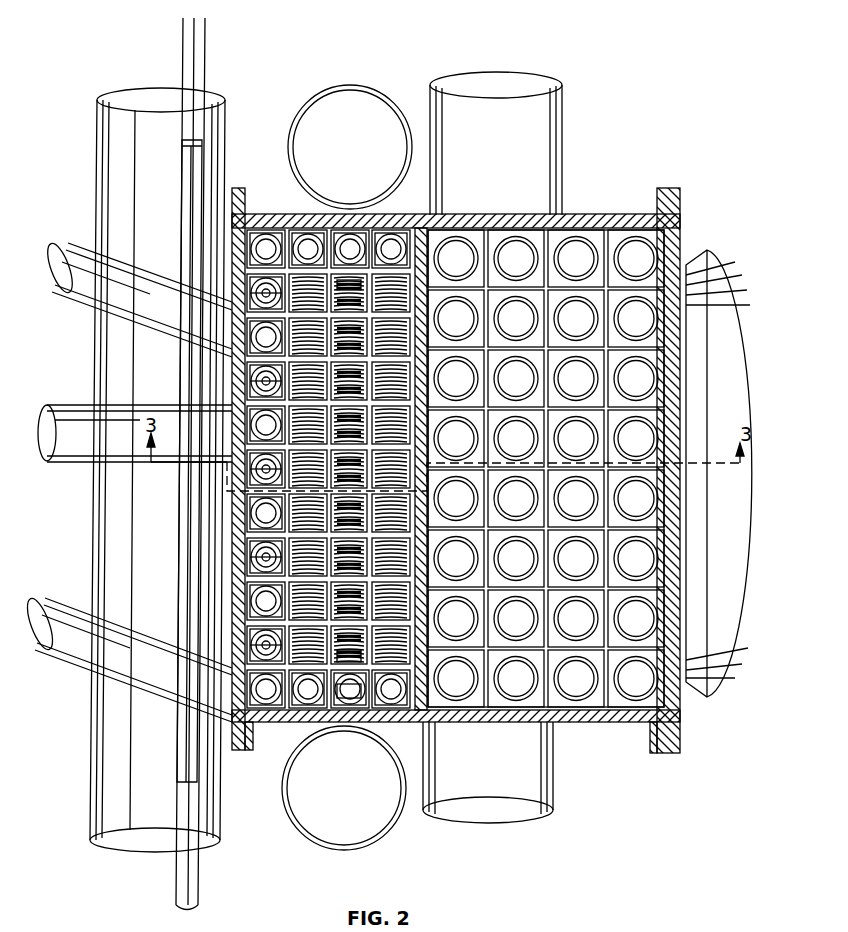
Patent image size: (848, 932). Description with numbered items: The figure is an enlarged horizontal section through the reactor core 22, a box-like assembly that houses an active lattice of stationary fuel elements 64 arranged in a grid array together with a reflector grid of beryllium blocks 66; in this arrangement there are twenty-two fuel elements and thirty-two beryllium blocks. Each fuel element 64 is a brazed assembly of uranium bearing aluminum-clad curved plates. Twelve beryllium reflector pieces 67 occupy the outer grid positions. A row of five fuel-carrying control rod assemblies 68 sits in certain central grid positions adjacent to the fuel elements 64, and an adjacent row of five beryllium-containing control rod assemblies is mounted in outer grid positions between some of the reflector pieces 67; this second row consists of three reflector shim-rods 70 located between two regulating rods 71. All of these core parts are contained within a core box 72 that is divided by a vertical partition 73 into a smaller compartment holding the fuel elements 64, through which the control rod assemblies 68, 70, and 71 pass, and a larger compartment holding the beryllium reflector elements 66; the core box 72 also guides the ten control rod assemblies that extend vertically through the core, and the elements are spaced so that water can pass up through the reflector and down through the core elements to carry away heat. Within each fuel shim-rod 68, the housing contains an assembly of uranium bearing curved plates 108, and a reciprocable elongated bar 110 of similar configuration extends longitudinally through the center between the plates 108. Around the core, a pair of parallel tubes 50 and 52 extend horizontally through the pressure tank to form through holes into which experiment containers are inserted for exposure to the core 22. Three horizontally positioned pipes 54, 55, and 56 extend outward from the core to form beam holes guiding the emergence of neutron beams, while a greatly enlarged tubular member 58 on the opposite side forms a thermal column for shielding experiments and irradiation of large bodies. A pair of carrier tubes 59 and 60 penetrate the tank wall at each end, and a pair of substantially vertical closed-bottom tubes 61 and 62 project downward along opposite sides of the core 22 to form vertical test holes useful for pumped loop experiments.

The reactor core 22 is at (585, 187).
The parallel tube 50 is at (121, 851).
The parallel tube 52 is at (477, 819).
The horizontally positioned pipe 54 is at (81, 243).
The horizontally positioned pipe 55 is at (70, 406).
The horizontally positioned pipe 56 is at (63, 607).
The tubular member 58 is at (722, 700).
The carrier tube 59 is at (206, 68).
The carrier tube 60 is at (186, 226).
The vertical tube 61 is at (386, 94).
The vertical tube 62 is at (373, 841).
The stationary fuel element 64 is at (312, 278).
The beryllium block 66 is at (590, 232).
The beryllium reflector piece 67 is at (265, 232).
The control rod assembly 68 is at (357, 270).
The reflector shim-rod 70 is at (250, 470).
The regulating rod 71 is at (262, 298).
The core box 72 is at (574, 748).
The vertical partition 73 is at (432, 468).
The uranium bearing curved plate 108 is at (343, 279).
The elongated bar 110 is at (368, 668).